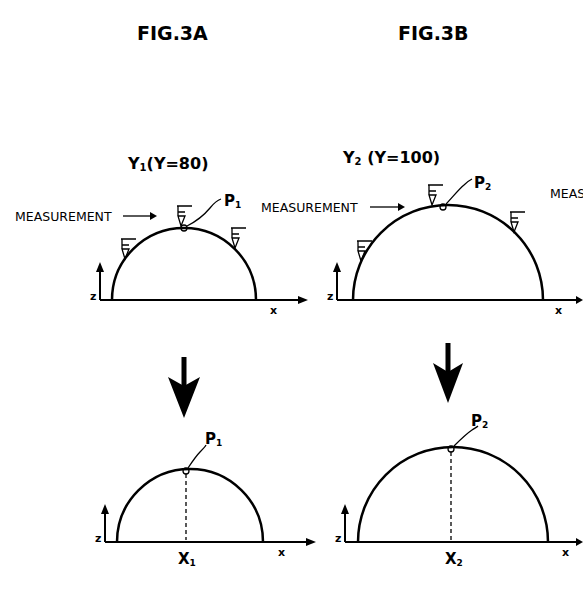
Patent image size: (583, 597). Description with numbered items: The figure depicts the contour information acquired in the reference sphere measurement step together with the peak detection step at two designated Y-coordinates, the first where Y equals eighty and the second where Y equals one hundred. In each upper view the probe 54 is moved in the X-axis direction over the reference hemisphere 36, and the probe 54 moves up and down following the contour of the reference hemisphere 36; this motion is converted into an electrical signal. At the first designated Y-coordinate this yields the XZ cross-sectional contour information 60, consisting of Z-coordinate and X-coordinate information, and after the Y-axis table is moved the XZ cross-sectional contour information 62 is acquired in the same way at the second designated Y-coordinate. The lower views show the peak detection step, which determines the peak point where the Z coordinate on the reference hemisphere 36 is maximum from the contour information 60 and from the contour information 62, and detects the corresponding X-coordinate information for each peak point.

In FIG. 3A, the reference hemisphere 36 is at (243, 257).
In FIG. 3B, the reference hemisphere 36 is at (531, 253).
In FIG. 3A, the probe 54 is at (121, 249).
In FIG. 3B, the probe 54 is at (359, 250).
In FIG. 3A, the XZ cross-sectional contour information 60 is at (240, 490).
In FIG. 3B, the XZ cross-sectional contour information 62 is at (528, 485).